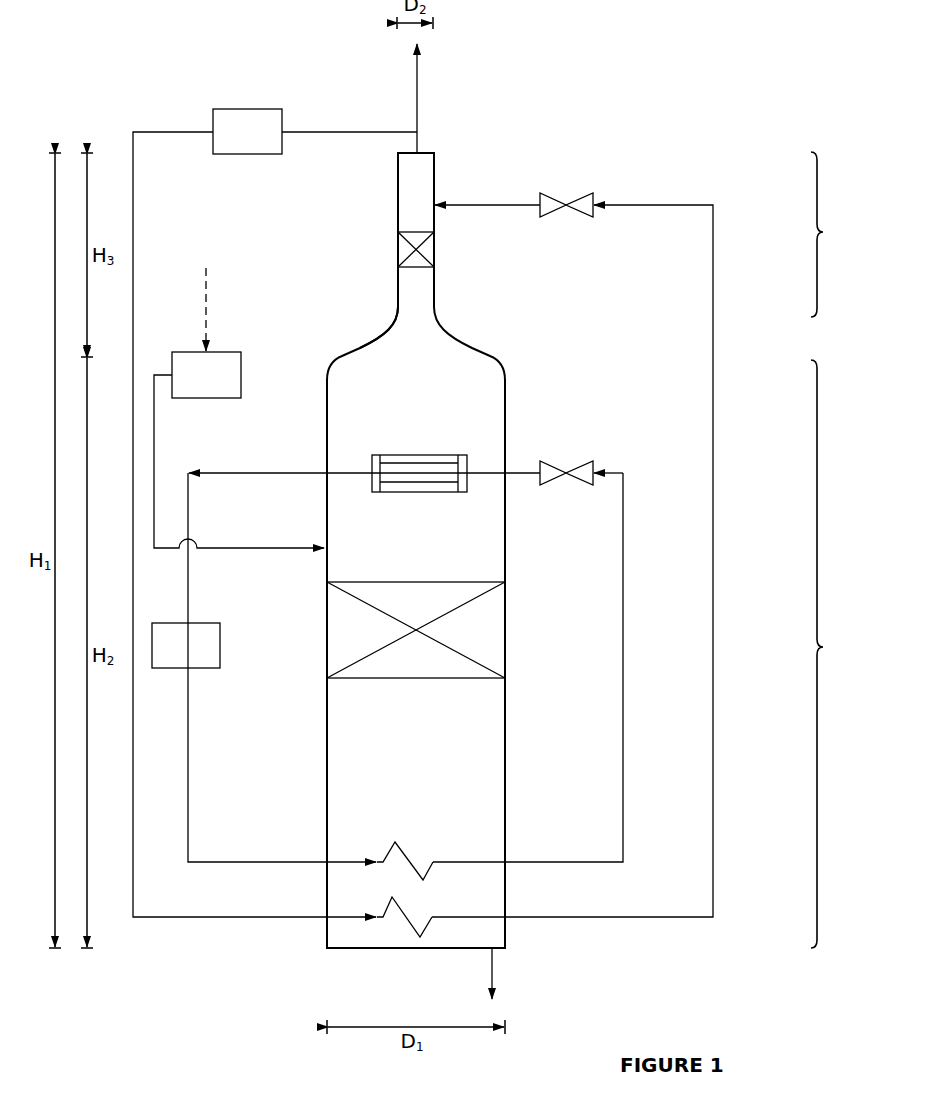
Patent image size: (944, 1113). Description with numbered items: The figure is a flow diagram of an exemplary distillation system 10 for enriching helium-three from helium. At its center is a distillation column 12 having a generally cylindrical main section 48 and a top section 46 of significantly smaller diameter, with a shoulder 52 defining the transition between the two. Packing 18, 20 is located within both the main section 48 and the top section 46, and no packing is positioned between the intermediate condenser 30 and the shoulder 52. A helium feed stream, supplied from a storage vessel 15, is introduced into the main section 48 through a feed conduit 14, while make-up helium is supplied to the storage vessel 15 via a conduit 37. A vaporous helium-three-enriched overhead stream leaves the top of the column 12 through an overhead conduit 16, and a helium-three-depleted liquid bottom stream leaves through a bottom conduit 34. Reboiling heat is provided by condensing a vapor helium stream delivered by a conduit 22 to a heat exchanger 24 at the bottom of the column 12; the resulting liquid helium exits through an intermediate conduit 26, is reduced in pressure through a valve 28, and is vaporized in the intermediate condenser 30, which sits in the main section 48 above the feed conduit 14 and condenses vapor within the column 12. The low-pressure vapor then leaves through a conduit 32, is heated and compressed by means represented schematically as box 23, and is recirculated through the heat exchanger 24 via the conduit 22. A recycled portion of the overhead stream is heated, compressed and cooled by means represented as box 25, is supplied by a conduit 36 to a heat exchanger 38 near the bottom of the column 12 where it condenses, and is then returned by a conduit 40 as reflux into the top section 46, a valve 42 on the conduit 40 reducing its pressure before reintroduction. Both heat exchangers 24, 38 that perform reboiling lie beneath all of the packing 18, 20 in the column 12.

The distillation system 10 is at (660, 130).
The distillation column 12 is at (480, 383).
The feed conduit 14 is at (240, 550).
The storage vessel 15 is at (222, 365).
The overhead conduit 16 is at (417, 77).
The packing 18 is at (487, 628).
The packing 20 is at (398, 248).
The conduit 22 is at (210, 858).
The box (compression means) 23 is at (203, 645).
The heat exchanger 24 is at (400, 865).
The box (heating, compressing and cooling means) 25 is at (263, 143).
The intermediate conduit 26 is at (624, 622).
The valve 28 is at (558, 470).
The intermediate condenser 30 is at (386, 455).
The conduit 32 is at (243, 470).
The bottom conduit 34 is at (494, 972).
The conduit 36 is at (148, 915).
The conduit 37 is at (205, 317).
The heat exchanger 38 is at (405, 920).
The conduit 40 is at (628, 918).
The valve 42 is at (556, 200).
The top section 46 is at (833, 234).
The main section 48 is at (833, 654).
The shoulder 52 is at (480, 357).